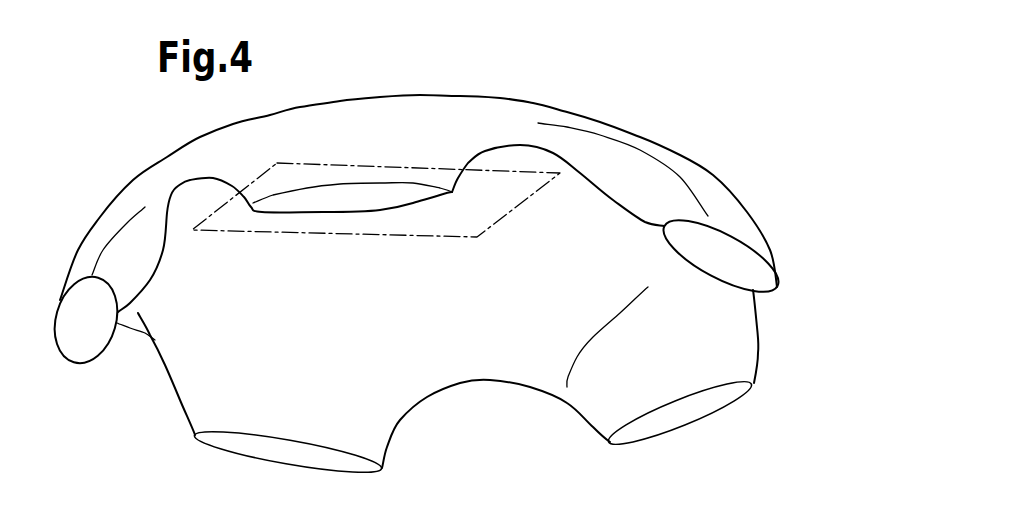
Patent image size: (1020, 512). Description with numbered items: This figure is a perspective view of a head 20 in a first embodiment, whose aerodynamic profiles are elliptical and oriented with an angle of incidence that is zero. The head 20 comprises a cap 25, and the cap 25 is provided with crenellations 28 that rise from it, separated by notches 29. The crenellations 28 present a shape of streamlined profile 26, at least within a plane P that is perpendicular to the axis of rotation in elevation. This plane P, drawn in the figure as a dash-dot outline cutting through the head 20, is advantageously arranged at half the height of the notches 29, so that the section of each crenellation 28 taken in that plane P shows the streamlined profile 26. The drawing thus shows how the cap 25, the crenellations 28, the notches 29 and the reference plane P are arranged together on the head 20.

The head 20 is at (553, 93).
The cap 25 is at (448, 118).
The streamlined profile 26 is at (343, 198).
The crenellations 28 is at (740, 217).
The notches 29 is at (587, 183).
The plane P is at (507, 217).